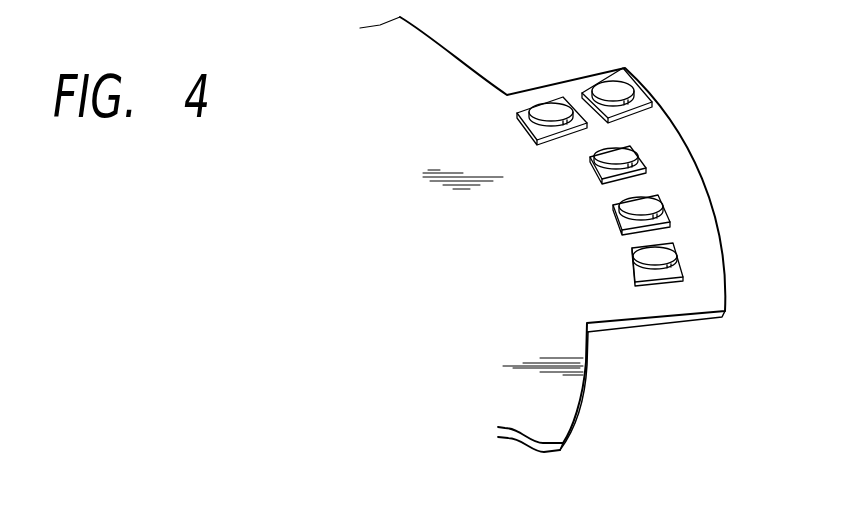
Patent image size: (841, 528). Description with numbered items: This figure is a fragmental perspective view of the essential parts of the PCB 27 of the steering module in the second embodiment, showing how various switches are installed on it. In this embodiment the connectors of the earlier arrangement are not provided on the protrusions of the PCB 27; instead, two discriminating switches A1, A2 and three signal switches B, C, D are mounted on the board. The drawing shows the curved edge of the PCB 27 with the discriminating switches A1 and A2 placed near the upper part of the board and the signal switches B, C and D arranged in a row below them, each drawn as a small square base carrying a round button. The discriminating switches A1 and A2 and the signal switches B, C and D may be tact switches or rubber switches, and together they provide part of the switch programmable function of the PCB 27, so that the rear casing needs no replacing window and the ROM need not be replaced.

The PCB 27 is at (568, 396).
The discriminating switch A1 is at (520, 126).
The discriminating switch A2 is at (623, 90).
The signal switch B is at (595, 165).
The signal switch C is at (615, 212).
The signal switch D is at (635, 255).